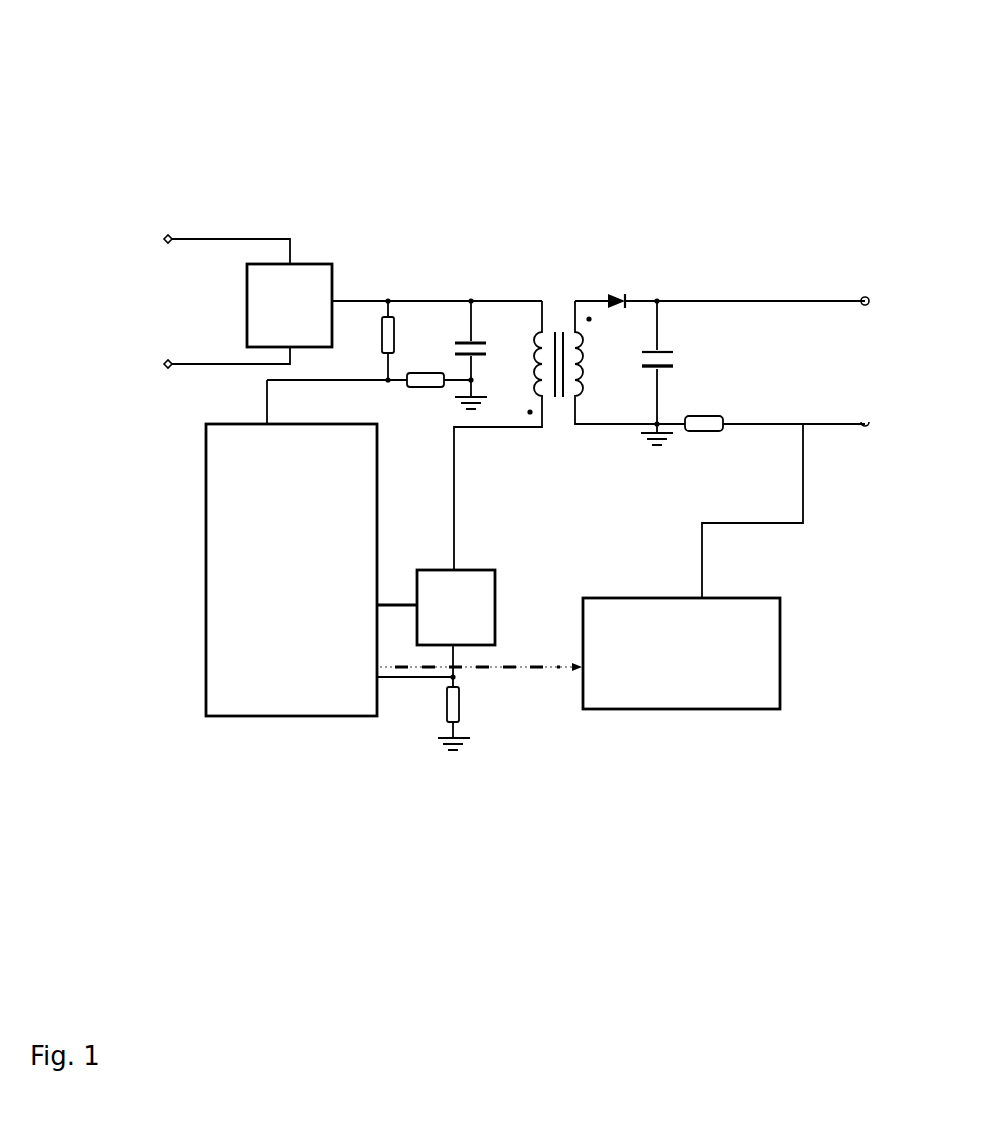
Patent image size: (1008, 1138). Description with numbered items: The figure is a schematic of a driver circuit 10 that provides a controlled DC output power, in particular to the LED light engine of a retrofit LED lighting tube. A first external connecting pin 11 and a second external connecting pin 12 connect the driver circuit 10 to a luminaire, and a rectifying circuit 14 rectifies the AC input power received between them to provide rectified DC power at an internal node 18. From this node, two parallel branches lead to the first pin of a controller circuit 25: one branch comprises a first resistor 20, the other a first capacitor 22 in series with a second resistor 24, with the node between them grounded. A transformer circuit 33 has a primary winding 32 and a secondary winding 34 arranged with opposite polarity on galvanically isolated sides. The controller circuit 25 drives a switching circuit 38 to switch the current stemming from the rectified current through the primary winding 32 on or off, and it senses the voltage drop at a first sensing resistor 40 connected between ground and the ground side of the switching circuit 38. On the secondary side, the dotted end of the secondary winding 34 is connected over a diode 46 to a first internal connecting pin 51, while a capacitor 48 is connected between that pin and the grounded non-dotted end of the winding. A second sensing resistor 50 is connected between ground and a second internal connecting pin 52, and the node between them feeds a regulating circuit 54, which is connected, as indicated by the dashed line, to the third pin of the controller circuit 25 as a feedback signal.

The driver circuit 10 is at (300, 118).
The first external connecting pin 11 is at (172, 235).
The second external connecting pin 12 is at (169, 373).
The rectifying circuit 14 is at (302, 260).
The internal node 18 is at (332, 288).
The first resistor 20 is at (383, 347).
The first capacitor 22 is at (453, 327).
The second resistor 24 is at (426, 392).
The controller circuit 25 is at (205, 613).
The primary winding 32 is at (532, 297).
The transformer circuit 33 is at (555, 283).
The secondary winding 34 is at (587, 297).
The switching circuit 38 is at (495, 580).
The first sensing resistor 40 is at (463, 703).
The diode 46 is at (623, 291).
The capacitor 48 is at (696, 362).
The second sensing resistor 50 is at (706, 432).
The first internal connecting pin 51 is at (865, 297).
The second internal connecting pin 52 is at (865, 434).
The regulating circuit 54 is at (780, 645).